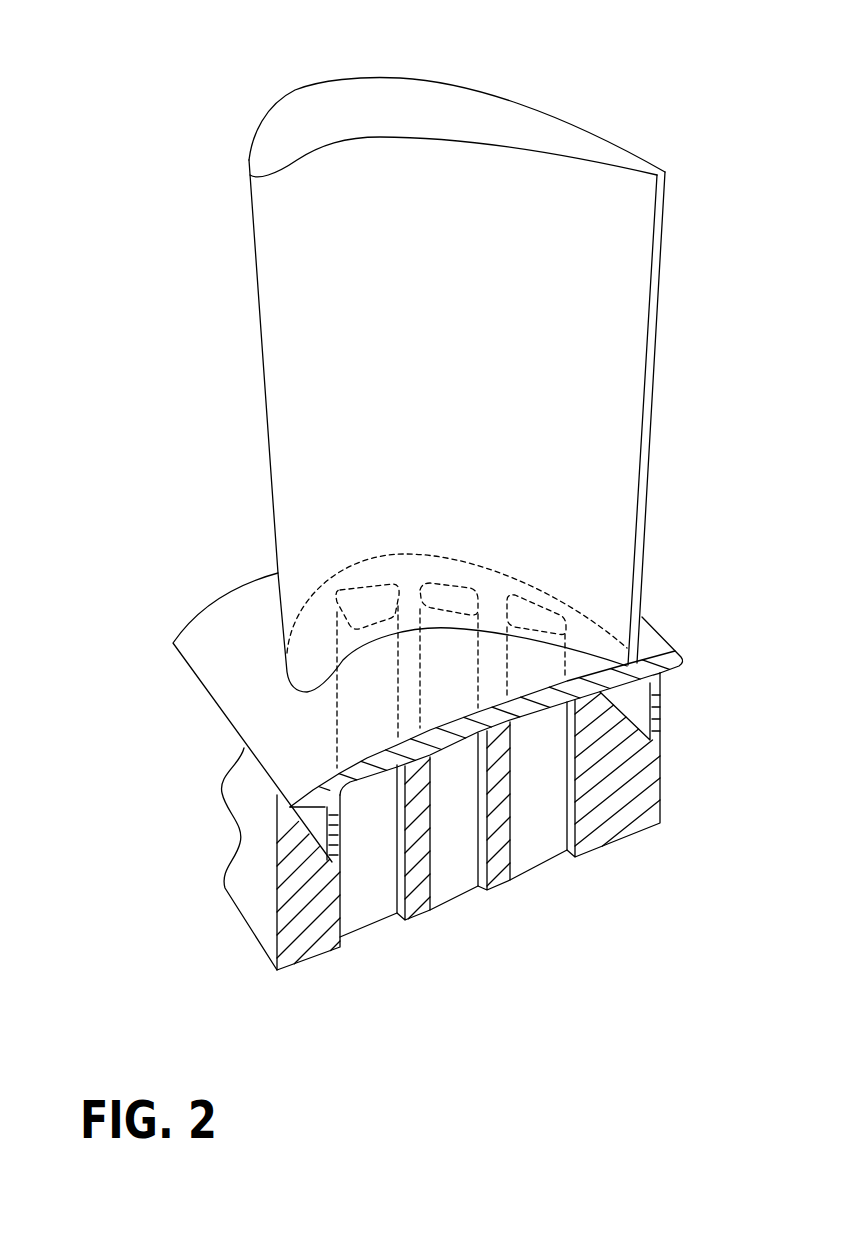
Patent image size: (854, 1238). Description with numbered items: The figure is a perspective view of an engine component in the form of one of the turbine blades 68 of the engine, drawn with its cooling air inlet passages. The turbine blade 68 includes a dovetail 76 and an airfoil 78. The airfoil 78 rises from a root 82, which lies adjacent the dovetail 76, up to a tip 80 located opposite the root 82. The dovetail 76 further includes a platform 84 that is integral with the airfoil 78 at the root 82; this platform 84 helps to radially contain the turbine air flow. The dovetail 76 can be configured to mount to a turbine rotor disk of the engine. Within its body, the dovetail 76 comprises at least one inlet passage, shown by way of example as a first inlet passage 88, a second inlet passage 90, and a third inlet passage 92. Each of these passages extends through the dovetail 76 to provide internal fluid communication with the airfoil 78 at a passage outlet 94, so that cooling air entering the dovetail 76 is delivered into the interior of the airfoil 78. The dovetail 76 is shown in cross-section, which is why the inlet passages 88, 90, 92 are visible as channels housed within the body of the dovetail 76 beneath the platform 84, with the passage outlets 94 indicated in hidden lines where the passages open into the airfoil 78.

The turbine blade 68 is at (103, 177).
The dovetail 76 is at (263, 847).
The airfoil 78 is at (268, 460).
The tip 80 is at (340, 117).
The root 82 is at (593, 647).
The platform 84 is at (242, 678).
The first inlet passage 88 is at (377, 950).
The second inlet passage 90 is at (459, 927).
The third inlet passage 92 is at (537, 899).
The passage outlet 94 is at (357, 588).